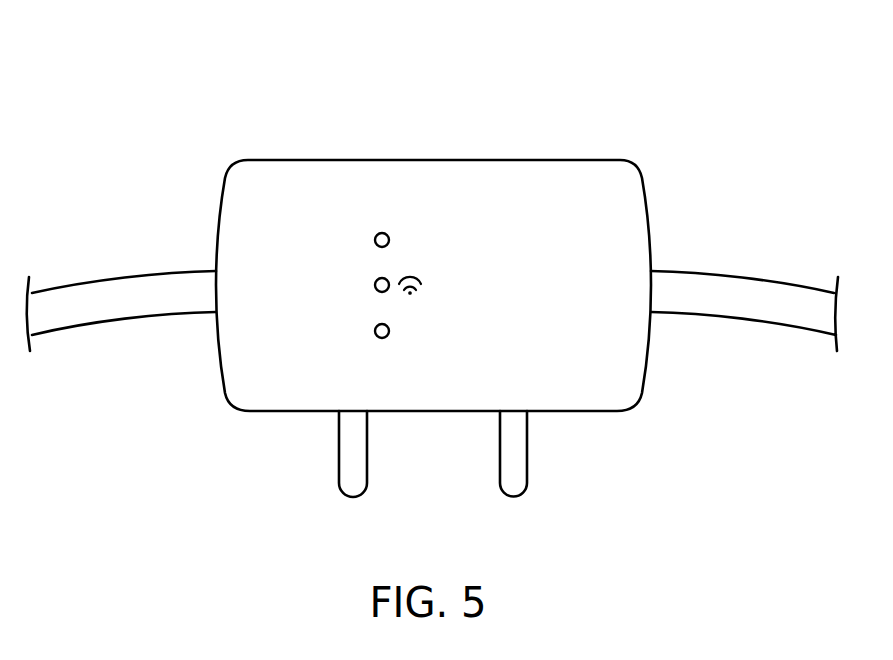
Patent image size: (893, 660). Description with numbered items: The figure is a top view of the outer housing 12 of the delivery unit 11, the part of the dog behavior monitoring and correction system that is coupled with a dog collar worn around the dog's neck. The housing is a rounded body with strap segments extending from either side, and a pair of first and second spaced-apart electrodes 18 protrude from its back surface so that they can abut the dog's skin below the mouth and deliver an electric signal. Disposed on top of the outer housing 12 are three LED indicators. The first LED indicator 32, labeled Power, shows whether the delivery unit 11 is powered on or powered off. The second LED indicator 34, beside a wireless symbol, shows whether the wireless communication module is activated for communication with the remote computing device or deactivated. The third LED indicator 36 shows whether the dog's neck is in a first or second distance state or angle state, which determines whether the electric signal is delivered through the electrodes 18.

The delivery unit 11 is at (432, 274).
The outer housing 12 is at (328, 187).
The first and second spaced-apart electrodes 18 is at (352, 475).
The first LED indicator 32 is at (382, 232).
The second LED indicator 34 is at (374, 285).
The third LED indicator 36 is at (382, 338).